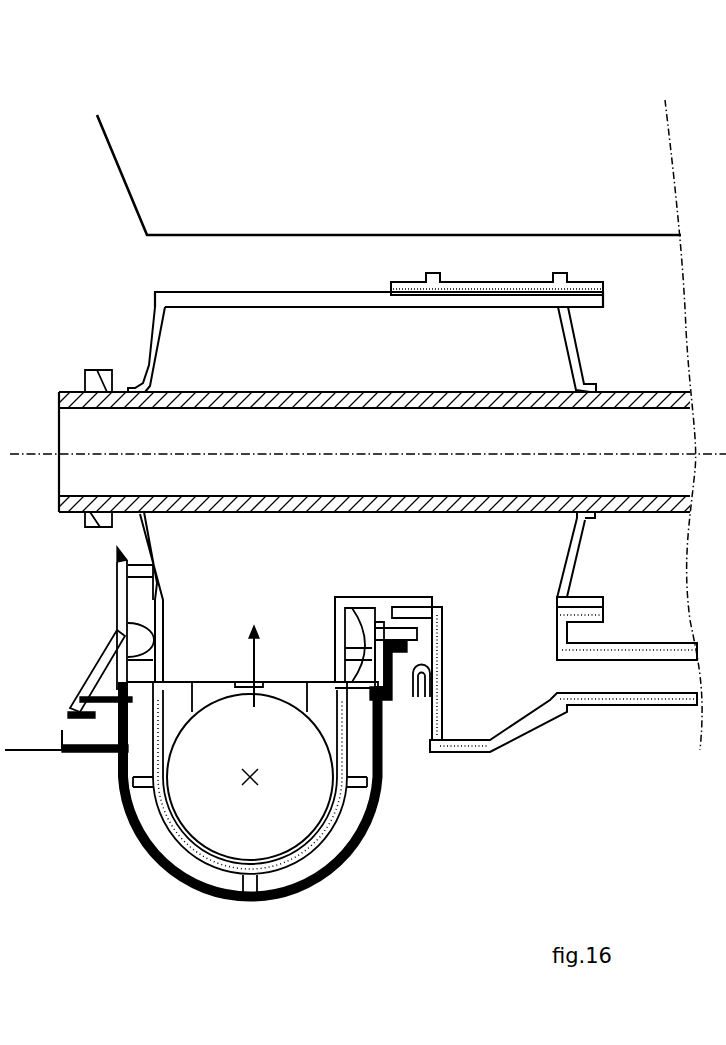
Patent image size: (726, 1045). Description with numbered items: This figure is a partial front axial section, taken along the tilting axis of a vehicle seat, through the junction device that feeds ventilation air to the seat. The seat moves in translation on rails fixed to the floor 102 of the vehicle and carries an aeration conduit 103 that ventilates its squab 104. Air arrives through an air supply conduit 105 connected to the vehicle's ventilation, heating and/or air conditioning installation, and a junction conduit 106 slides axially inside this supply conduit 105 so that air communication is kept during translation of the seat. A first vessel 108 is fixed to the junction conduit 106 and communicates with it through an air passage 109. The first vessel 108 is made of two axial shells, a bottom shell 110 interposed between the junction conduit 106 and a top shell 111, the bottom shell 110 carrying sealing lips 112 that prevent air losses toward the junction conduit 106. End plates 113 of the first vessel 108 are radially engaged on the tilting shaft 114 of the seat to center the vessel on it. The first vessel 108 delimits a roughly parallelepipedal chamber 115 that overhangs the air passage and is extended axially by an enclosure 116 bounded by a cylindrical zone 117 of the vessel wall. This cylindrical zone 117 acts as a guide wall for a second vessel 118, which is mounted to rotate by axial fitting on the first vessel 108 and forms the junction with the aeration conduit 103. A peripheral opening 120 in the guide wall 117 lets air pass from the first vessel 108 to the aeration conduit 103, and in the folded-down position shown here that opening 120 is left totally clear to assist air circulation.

The floor 102 is at (18, 752).
The aeration conduit 103 is at (518, 682).
The squab 104 is at (113, 152).
The air supply conduit 105 is at (128, 833).
The junction conduit 106 is at (265, 778).
The first vessel 108 is at (132, 327).
The air passage 109 is at (253, 705).
The bottom shell 110 is at (165, 613).
The top shell 111 is at (232, 300).
The sealing lips 112 is at (118, 603).
The end plates 113 is at (153, 357).
The tilting shaft 114 is at (363, 477).
The chamber 115 is at (308, 603).
The enclosure 116 is at (525, 353).
The cylindrical zone 117 is at (463, 308).
The second vessel 118 is at (483, 270).
The opening 120 is at (452, 575).